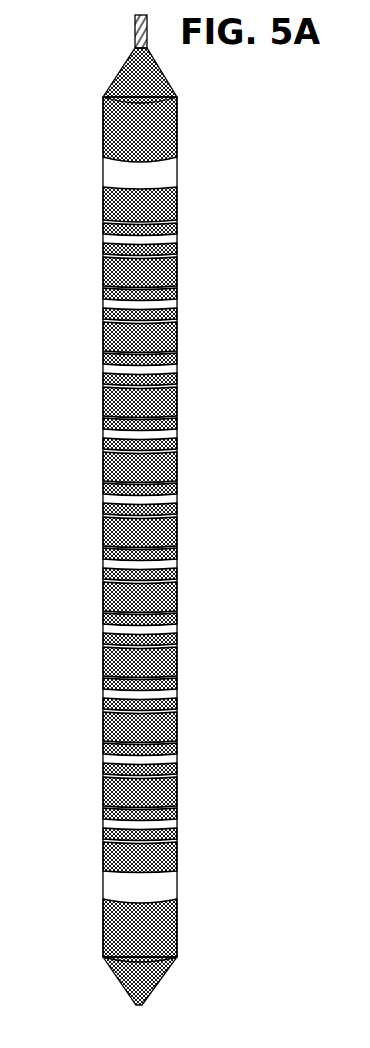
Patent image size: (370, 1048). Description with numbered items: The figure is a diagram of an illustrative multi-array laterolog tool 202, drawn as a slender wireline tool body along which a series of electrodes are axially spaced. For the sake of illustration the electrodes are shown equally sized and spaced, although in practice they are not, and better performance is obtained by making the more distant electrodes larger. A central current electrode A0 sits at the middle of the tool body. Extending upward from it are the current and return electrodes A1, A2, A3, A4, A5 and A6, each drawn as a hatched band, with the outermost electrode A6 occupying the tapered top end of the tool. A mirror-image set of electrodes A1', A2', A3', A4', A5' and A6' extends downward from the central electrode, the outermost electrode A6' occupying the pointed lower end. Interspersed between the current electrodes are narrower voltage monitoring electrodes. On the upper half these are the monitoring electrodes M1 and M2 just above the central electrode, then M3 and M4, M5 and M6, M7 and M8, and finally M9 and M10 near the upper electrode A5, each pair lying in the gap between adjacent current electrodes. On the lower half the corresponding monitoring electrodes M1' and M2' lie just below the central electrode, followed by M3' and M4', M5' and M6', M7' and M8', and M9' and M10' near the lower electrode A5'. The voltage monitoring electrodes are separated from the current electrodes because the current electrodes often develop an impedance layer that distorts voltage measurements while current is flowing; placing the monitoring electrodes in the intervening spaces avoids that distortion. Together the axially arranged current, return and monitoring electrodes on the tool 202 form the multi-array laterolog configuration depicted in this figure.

The multi-array laterolog tool 202 is at (109, 96).
The electrode A6 is at (156, 129).
The electrode A5 is at (156, 204).
The electrode A4 is at (156, 272).
The electrode A3 is at (156, 337).
The electrode A2 is at (156, 402).
The electrode A1 is at (156, 467).
The electrode A0 is at (177, 531).
The electrode A1' is at (158, 597).
The electrode A2' is at (158, 662).
The electrode A3' is at (158, 727).
The electrode A4' is at (158, 792).
The electrode A5' is at (158, 857).
The electrode A6' is at (158, 928).
The voltage monitoring electrode M10 is at (117, 226).
The voltage monitoring electrode M9 is at (120, 251).
The voltage monitoring electrode M8 is at (120, 291).
The voltage monitoring electrode M7 is at (120, 316).
The voltage monitoring electrode M6 is at (120, 356).
The voltage monitoring electrode M5 is at (120, 381).
The voltage monitoring electrode M4 is at (120, 421).
The voltage monitoring electrode M3 is at (120, 446).
The voltage monitoring electrode M2 is at (120, 486).
The voltage monitoring electrode M1 is at (120, 511).
The voltage monitoring electrode M1' is at (118, 551).
The voltage monitoring electrode M2' is at (118, 576).
The voltage monitoring electrode M3' is at (118, 616).
The voltage monitoring electrode M4' is at (118, 641).
The voltage monitoring electrode M5' is at (118, 681).
The voltage monitoring electrode M6' is at (118, 706).
The voltage monitoring electrode M7' is at (118, 746).
The voltage monitoring electrode M8' is at (118, 771).
The voltage monitoring electrode M9' is at (118, 811).
The voltage monitoring electrode M10' is at (115, 836).